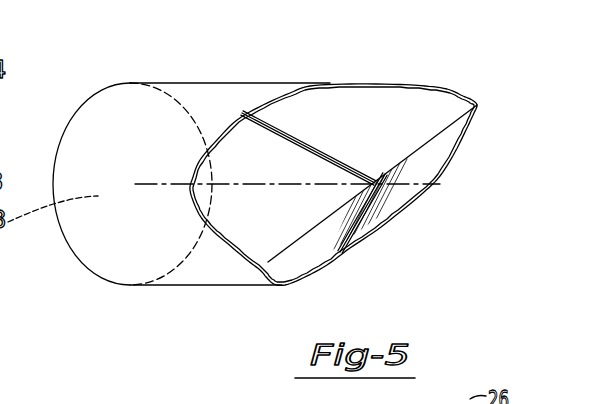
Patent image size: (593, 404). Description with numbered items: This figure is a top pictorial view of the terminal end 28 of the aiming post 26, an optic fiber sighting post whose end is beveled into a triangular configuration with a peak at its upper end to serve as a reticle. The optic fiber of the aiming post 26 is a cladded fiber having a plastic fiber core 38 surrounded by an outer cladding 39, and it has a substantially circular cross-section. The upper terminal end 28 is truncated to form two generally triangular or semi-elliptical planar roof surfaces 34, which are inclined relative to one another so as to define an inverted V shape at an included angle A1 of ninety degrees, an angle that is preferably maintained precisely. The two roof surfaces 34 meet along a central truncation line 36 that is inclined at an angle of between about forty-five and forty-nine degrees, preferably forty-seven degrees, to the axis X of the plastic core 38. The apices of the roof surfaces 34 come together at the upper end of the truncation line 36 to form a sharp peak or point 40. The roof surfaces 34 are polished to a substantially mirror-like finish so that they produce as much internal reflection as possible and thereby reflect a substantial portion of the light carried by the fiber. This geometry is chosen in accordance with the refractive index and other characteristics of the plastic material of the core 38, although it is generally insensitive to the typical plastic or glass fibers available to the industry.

The aiming post 26 is at (78, 104).
The terminal end 28 is at (453, 70).
The roof surfaces 34 is at (363, 112).
The central truncation line 36 is at (433, 132).
The fiber core 38 is at (258, 210).
The outer cladding 39 is at (262, 102).
The point 40 is at (477, 105).
The included angle A1 is at (300, 156).
The axis X is at (390, 183).